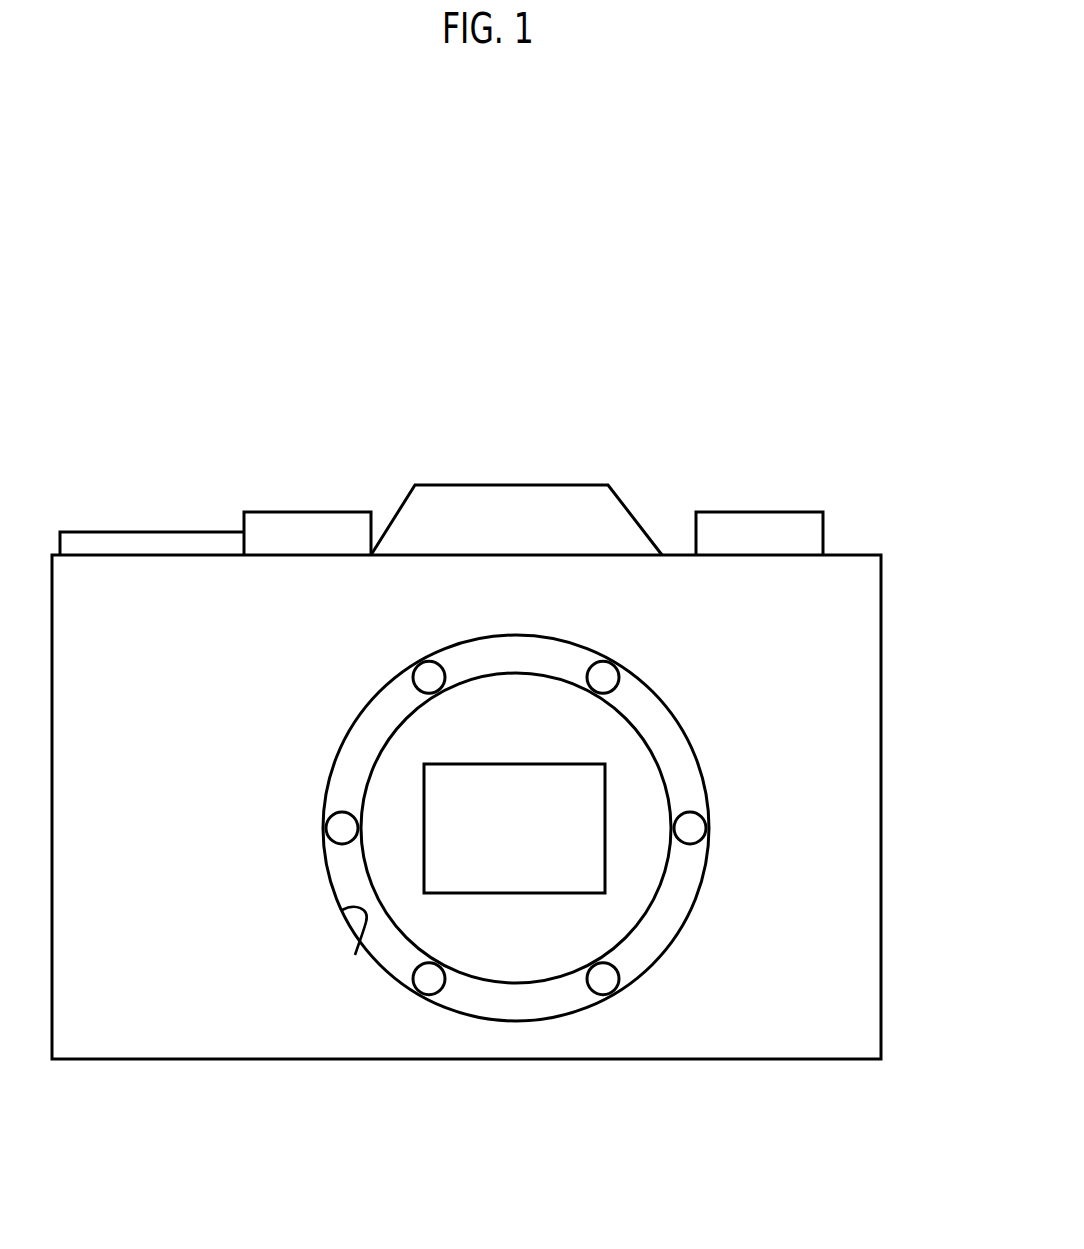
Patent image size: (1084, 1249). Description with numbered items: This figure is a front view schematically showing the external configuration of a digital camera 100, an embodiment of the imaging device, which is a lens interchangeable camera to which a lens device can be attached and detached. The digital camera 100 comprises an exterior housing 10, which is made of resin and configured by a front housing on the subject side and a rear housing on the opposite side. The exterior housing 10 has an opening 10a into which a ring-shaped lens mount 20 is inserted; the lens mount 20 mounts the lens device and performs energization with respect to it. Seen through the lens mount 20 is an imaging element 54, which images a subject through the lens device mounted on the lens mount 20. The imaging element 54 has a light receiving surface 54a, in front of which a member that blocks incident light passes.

The digital camera 100 is at (722, 447).
The exterior housing 10 is at (240, 995).
The opening 10a is at (362, 930).
The lens mount 20 is at (655, 935).
The imaging element 54 is at (563, 760).
The light receiving surface 54a is at (583, 793).